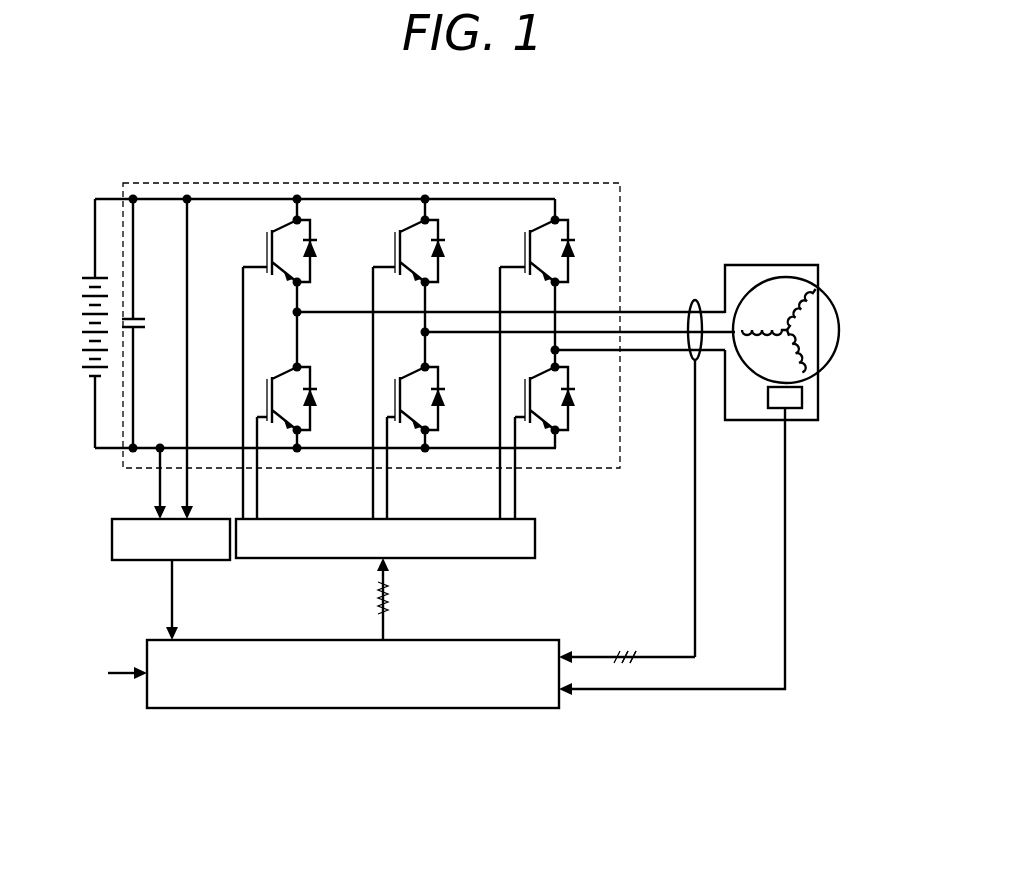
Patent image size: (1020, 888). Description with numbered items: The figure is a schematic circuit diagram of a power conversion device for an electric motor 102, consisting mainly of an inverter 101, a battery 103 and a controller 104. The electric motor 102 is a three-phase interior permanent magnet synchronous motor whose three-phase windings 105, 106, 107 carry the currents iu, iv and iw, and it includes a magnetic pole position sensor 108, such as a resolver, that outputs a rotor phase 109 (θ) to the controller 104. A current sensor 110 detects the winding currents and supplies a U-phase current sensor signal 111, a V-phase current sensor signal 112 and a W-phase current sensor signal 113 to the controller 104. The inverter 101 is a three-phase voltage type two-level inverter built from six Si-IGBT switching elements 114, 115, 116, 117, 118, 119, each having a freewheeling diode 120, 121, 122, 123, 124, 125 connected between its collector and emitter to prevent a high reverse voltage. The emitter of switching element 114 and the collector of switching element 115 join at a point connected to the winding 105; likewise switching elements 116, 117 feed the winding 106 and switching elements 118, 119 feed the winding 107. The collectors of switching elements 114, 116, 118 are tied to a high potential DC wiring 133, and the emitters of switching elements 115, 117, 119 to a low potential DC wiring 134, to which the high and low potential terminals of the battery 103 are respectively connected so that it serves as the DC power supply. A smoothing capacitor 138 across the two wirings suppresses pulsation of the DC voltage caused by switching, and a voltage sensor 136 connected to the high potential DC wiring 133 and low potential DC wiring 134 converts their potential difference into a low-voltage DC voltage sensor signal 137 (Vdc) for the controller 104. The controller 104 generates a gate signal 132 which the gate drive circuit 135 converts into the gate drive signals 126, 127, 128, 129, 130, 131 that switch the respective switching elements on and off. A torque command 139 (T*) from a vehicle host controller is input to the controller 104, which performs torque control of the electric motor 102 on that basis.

The inverter 101 is at (622, 235).
The electric motor 102 is at (800, 280).
The battery 103 is at (82, 335).
The controller 104 is at (147, 656).
The winding 105 is at (820, 290).
The winding 106 is at (776, 320).
The winding 107 is at (800, 350).
The magnetic pole position sensor 108 is at (802, 398).
The rotor phase 109 is at (787, 676).
The current sensor 110 is at (690, 305).
The U-phase current sensor signal 111 is at (590, 620).
The V-phase current sensor signal 112 is at (629, 620).
The W-phase current sensor signal 113 is at (657, 625).
The switching element 114 is at (253, 252).
The switching element 115 is at (285, 382).
The switching element 116 is at (395, 255).
The switching element 117 is at (415, 382).
The switching element 118 is at (517, 252).
The switching element 119 is at (545, 385).
The freewheeling diode 120 is at (318, 250).
The freewheeling diode 121 is at (315, 405).
The freewheeling diode 122 is at (447, 247).
The freewheeling diode 123 is at (443, 406).
The freewheeling diode 124 is at (577, 247).
The freewheeling diode 125 is at (573, 408).
The gate drive signal 126 is at (240, 506).
The gate drive signal 127 is at (258, 512).
The gate drive signal 128 is at (372, 502).
The gate drive signal 129 is at (390, 512).
The gate drive signal 130 is at (500, 507).
The gate drive signal 131 is at (519, 507).
The gate signal 132 is at (390, 622).
The high potential DC wiring 133 is at (158, 195).
The low potential DC wiring 134 is at (115, 452).
The gate drive circuit 135 is at (537, 540).
The voltage sensor 136 is at (112, 545).
The DC voltage sensor signal 137 is at (165, 622).
The smoothing capacitor 138 is at (142, 330).
The torque command 139 is at (125, 680).